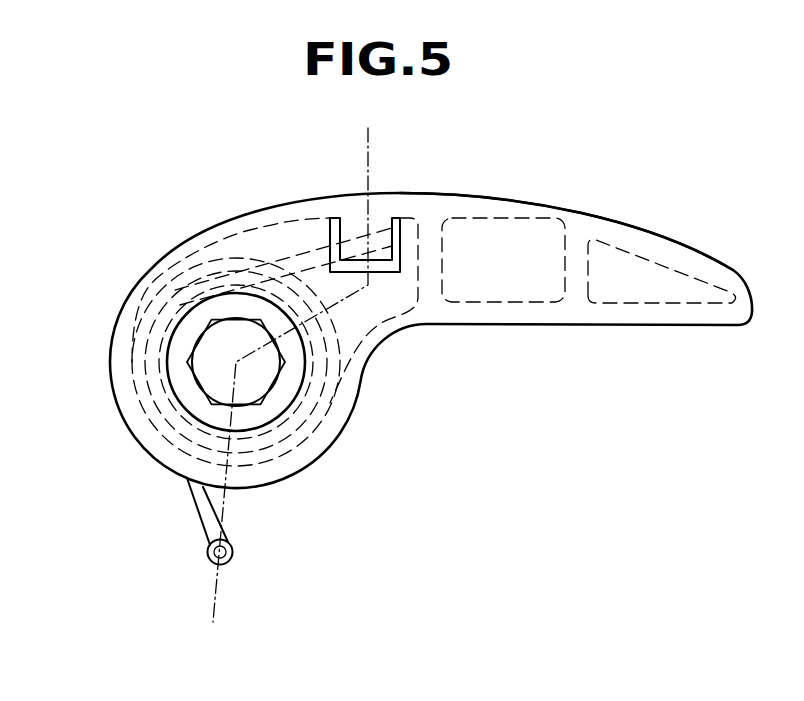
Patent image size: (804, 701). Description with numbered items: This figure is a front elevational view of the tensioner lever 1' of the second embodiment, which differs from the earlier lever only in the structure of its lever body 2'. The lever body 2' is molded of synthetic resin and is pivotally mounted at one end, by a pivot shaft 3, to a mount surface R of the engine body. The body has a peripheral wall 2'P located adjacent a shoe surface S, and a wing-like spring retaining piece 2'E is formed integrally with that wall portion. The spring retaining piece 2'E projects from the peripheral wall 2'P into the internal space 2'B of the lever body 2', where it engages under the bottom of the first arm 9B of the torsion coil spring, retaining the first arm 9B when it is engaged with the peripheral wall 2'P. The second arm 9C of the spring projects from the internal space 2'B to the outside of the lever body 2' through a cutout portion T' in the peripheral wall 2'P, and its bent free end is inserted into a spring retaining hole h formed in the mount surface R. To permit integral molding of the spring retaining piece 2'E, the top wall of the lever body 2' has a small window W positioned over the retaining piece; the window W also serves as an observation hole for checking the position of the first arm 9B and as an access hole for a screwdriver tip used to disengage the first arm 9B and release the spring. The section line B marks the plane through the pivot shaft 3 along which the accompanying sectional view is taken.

The tensioner lever 1' is at (431, 311).
The lever body 2' is at (662, 237).
The peripheral wall 2'P is at (231, 231).
The spring retaining piece 2'E is at (473, 260).
The internal space 2'B is at (401, 310).
The pivot shaft 3 is at (228, 352).
The first arm 9B is at (283, 254).
The second arm 9C is at (198, 518).
The spring retaining hole h is at (233, 553).
The window W is at (352, 222).
The shoe surface S is at (468, 195).
The cutout portion T' is at (242, 393).
The mount surface R is at (540, 401).
The section line B- B is at (222, 615).